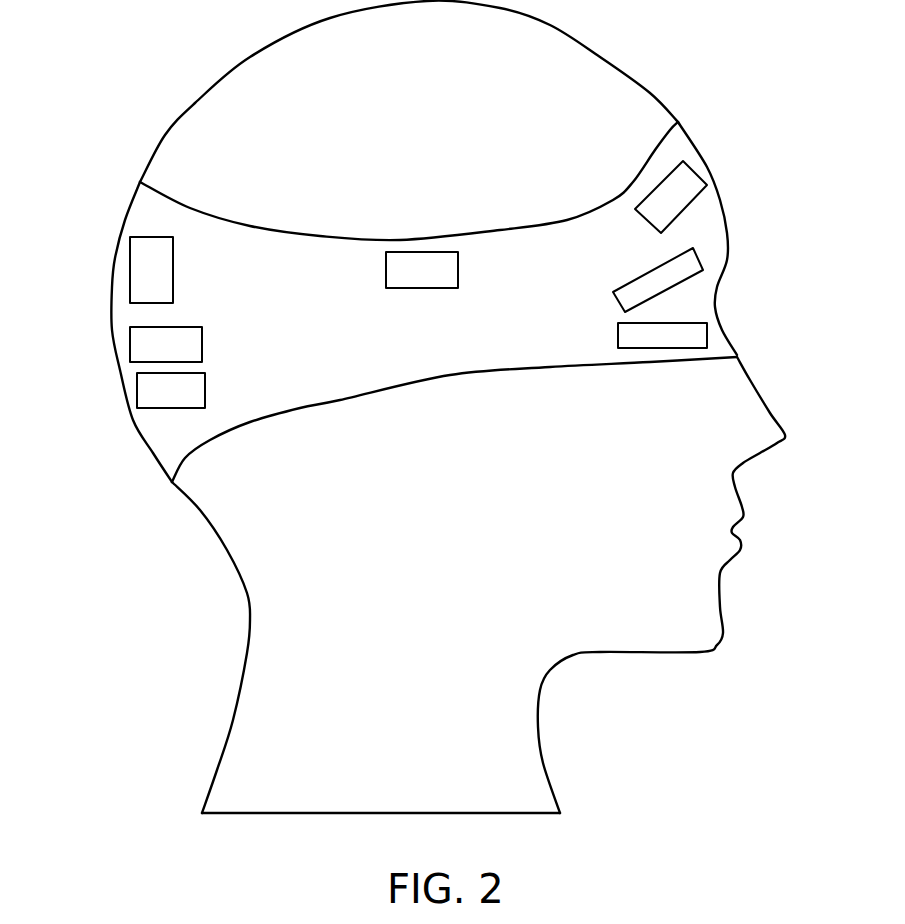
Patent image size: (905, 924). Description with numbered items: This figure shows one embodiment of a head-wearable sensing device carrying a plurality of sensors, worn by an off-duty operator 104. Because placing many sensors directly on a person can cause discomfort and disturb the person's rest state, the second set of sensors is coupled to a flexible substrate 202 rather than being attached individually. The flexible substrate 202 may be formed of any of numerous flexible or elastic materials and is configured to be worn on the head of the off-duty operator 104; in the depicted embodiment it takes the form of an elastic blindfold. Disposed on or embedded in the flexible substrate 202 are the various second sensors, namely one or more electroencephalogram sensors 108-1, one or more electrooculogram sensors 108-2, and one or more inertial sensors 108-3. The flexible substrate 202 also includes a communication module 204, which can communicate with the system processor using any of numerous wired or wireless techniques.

The off-duty operator 104 is at (195, 103).
The electroencephalogram (EEG) sensors 108-1 is at (130, 272).
The electrooculogram (EOG) sensors 108-2 is at (703, 262).
The inertial sensors 108-3 is at (130, 345).
The flexible substrate 202 is at (705, 152).
The communication module 204 is at (137, 388).